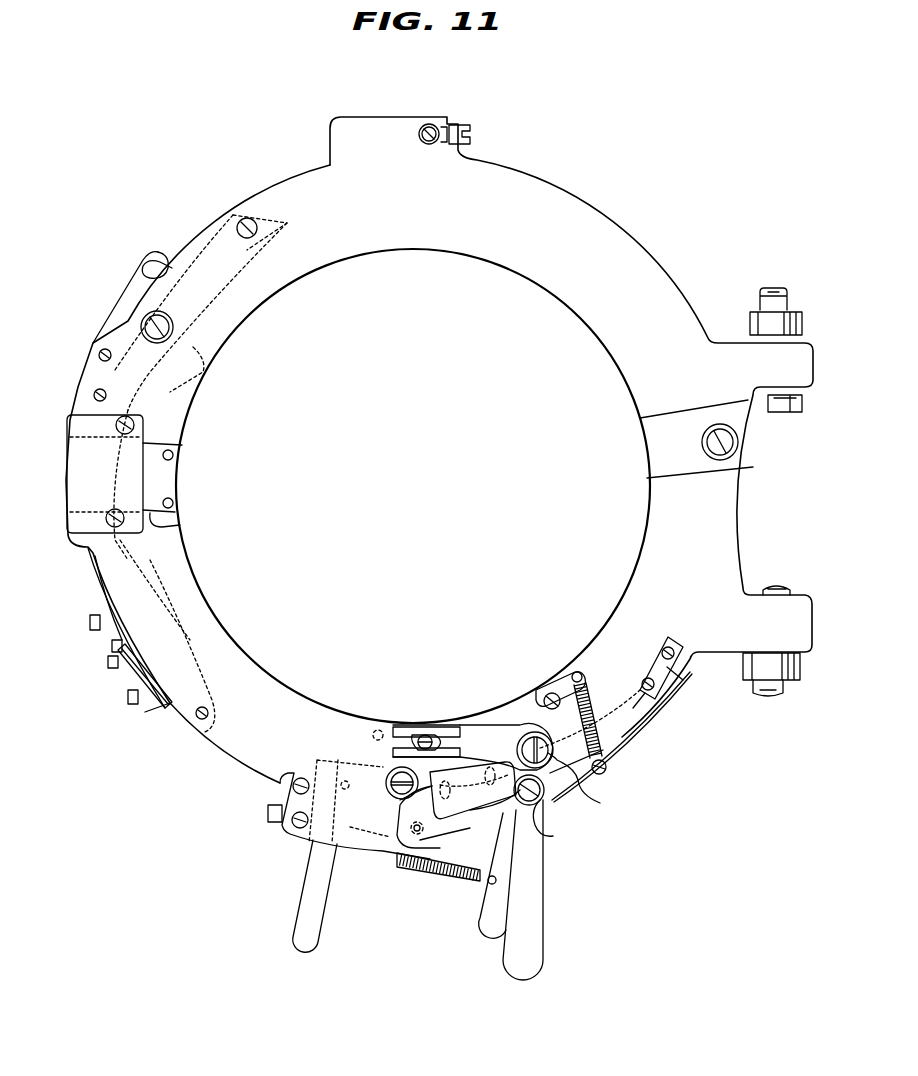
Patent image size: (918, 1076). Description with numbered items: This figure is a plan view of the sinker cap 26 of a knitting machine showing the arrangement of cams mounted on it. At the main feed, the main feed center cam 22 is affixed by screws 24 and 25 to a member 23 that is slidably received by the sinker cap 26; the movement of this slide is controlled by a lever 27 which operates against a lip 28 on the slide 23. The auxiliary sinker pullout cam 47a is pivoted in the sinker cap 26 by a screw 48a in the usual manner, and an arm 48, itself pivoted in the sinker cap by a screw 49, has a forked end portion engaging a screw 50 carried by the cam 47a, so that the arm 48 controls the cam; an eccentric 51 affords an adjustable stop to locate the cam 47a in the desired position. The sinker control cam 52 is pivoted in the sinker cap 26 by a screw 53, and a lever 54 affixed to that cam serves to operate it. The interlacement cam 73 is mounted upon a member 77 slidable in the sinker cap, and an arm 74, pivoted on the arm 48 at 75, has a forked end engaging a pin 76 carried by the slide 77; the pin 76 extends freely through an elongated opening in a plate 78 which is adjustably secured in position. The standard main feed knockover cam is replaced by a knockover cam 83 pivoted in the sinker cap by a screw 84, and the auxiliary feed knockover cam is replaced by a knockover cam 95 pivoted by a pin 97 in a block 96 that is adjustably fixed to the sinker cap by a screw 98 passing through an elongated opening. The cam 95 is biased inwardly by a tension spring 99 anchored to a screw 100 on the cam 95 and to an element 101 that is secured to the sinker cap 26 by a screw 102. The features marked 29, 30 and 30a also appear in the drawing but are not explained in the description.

The main feed center cam 22 is at (190, 387).
The member 23 is at (180, 522).
The screw 24 is at (175, 500).
The screw 25 is at (174, 455).
The sinker cap 26 is at (394, 249).
The lever 27 is at (88, 423).
The lip 28 is at (68, 505).
The screw 29 is at (95, 394).
The arm 30 is at (147, 255).
The hook end of arm 30a is at (170, 262).
The auxiliary sinker pullout cam 47a is at (372, 748).
The arm 48 is at (490, 935).
The screw 48a is at (378, 728).
The screw 49 is at (600, 803).
The screw 50 is at (428, 734).
The eccentric 51 is at (400, 768).
The sinker control cam 52 is at (305, 760).
The screw 53 is at (280, 783).
The lever 54 is at (312, 896).
The interlacement cam 73 is at (535, 699).
The arm 74 is at (543, 946).
The pivot 75 is at (555, 836).
The pin 76 is at (475, 832).
The member 77 is at (473, 746).
The plate 78 is at (428, 800).
The knockover cam 83 is at (100, 583).
The screw 84 is at (190, 720).
The knockover cam 95 is at (630, 742).
The block 96 is at (680, 678).
The pin 97 is at (668, 700).
The screw 98 is at (665, 645).
The tension spring 99 is at (590, 695).
The screw 100 is at (622, 755).
The element 101 is at (575, 672).
The screw 102 is at (540, 694).